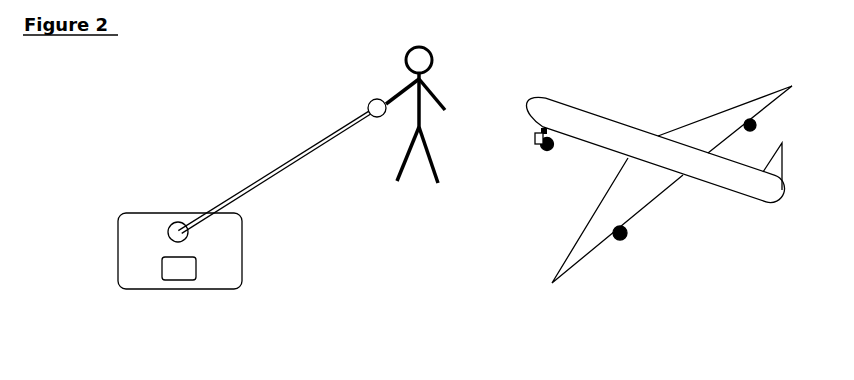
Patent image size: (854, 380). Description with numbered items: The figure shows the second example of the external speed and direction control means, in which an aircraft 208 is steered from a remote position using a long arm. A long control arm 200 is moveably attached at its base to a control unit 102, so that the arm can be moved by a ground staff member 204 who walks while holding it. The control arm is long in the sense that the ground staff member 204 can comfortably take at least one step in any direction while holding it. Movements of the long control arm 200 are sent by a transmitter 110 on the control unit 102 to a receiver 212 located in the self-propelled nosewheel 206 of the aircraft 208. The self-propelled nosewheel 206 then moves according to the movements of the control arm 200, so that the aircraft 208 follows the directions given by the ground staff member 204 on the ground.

The control unit 102 is at (138, 250).
The transmitter 110 is at (197, 272).
The long control arm 200 is at (264, 173).
The ground staff member 204 is at (405, 62).
The self-propelled nosewheel 206 is at (540, 148).
The aircraft 208 is at (590, 130).
The receiver 212 is at (536, 133).